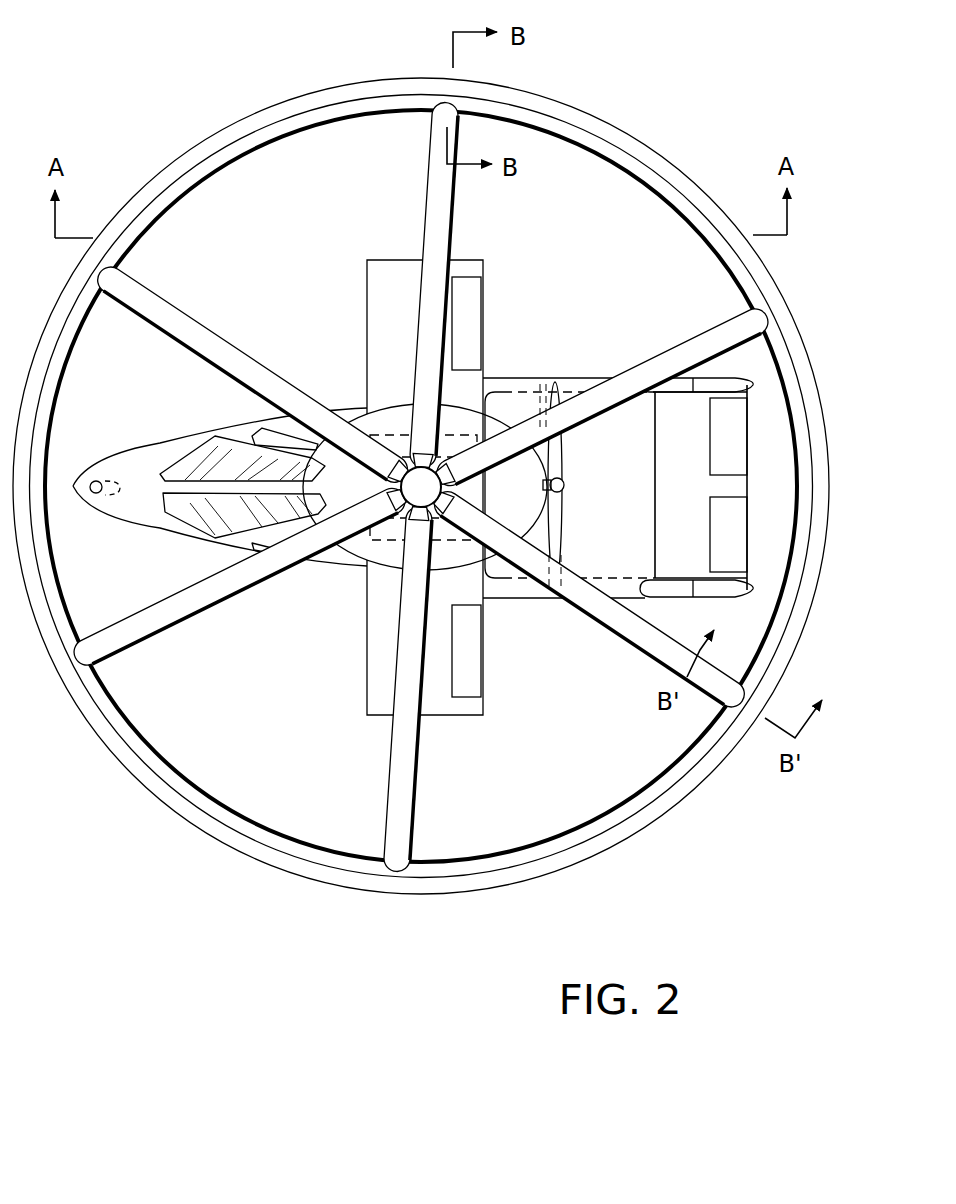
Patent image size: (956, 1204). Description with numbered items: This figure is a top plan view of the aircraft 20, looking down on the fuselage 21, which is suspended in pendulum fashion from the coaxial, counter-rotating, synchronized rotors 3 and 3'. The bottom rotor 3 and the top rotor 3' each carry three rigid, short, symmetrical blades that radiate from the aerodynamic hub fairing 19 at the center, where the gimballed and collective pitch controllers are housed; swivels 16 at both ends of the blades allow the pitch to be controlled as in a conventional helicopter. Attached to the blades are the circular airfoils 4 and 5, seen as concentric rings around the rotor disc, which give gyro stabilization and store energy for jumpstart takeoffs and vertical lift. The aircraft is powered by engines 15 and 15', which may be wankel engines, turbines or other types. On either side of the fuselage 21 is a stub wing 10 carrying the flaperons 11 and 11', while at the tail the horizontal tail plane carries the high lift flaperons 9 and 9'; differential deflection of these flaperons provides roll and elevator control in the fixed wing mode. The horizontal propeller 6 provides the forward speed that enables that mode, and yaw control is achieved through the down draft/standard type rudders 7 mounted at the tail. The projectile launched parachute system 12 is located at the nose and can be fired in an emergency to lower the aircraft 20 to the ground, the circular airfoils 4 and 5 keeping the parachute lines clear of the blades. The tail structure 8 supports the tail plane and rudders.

The bottom rotor 3 is at (409, 405).
The top rotor 3' is at (433, 566).
The circular airfoil 4 is at (192, 150).
The circular airfoil 5 is at (267, 130).
The horizontal propeller 6 is at (568, 468).
The rudders 7 is at (735, 397).
The tail frame 8 is at (652, 519).
The flaperon 9 is at (745, 436).
The flaperon 9' is at (748, 534).
The stub wing 10 is at (367, 292).
The flaperon 11 is at (495, 322).
The flaperon 11' is at (496, 651).
The projectile launched parachute system 12 is at (100, 494).
The engine 15 is at (402, 411).
The engine 15' is at (393, 565).
The swivels 16 is at (392, 502).
The aerodynamic hub fairing 19 is at (490, 493).
The aircraft 20 is at (683, 101).
The fuselage 21 is at (188, 428).